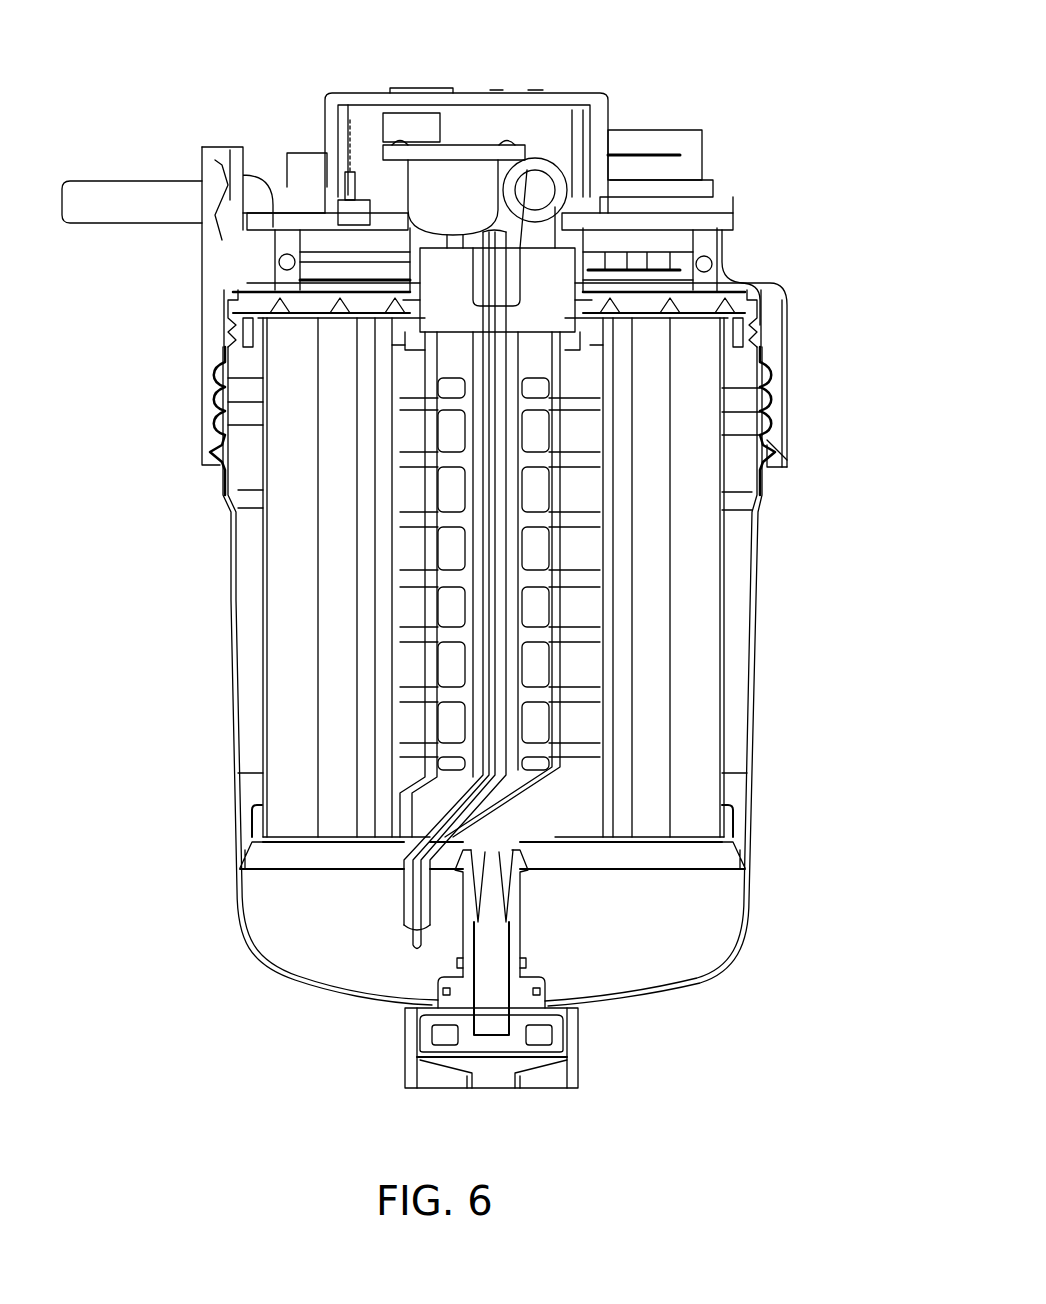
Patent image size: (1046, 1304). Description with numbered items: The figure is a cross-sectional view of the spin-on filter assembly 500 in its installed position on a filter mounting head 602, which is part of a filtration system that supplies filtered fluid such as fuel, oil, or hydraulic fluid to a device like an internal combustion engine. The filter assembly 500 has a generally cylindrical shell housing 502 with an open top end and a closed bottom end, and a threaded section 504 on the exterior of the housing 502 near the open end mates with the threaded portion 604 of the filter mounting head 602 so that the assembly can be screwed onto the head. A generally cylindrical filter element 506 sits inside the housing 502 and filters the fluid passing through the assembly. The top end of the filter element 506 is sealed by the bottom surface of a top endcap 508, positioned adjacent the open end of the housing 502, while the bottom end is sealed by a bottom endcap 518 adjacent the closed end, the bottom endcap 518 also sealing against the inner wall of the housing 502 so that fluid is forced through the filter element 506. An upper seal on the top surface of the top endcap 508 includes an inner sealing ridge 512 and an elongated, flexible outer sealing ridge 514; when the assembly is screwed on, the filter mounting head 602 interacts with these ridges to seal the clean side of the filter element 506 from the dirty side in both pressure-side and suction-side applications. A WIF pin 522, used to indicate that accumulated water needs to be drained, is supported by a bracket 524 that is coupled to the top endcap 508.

The spin-on filter assembly 500 is at (778, 893).
The housing 502 is at (247, 635).
The threaded section 504 is at (750, 422).
The filter element 506 is at (297, 563).
The top endcap 508 is at (705, 313).
The inner sealing ridge 512 is at (430, 290).
The outer sealing ridge 514 is at (235, 312).
The bottom endcap 518 is at (253, 840).
The WIF pin 522 is at (417, 942).
The bracket 524 is at (437, 797).
The filter mounting head 602 is at (588, 63).
The threaded portion 604 is at (210, 388).